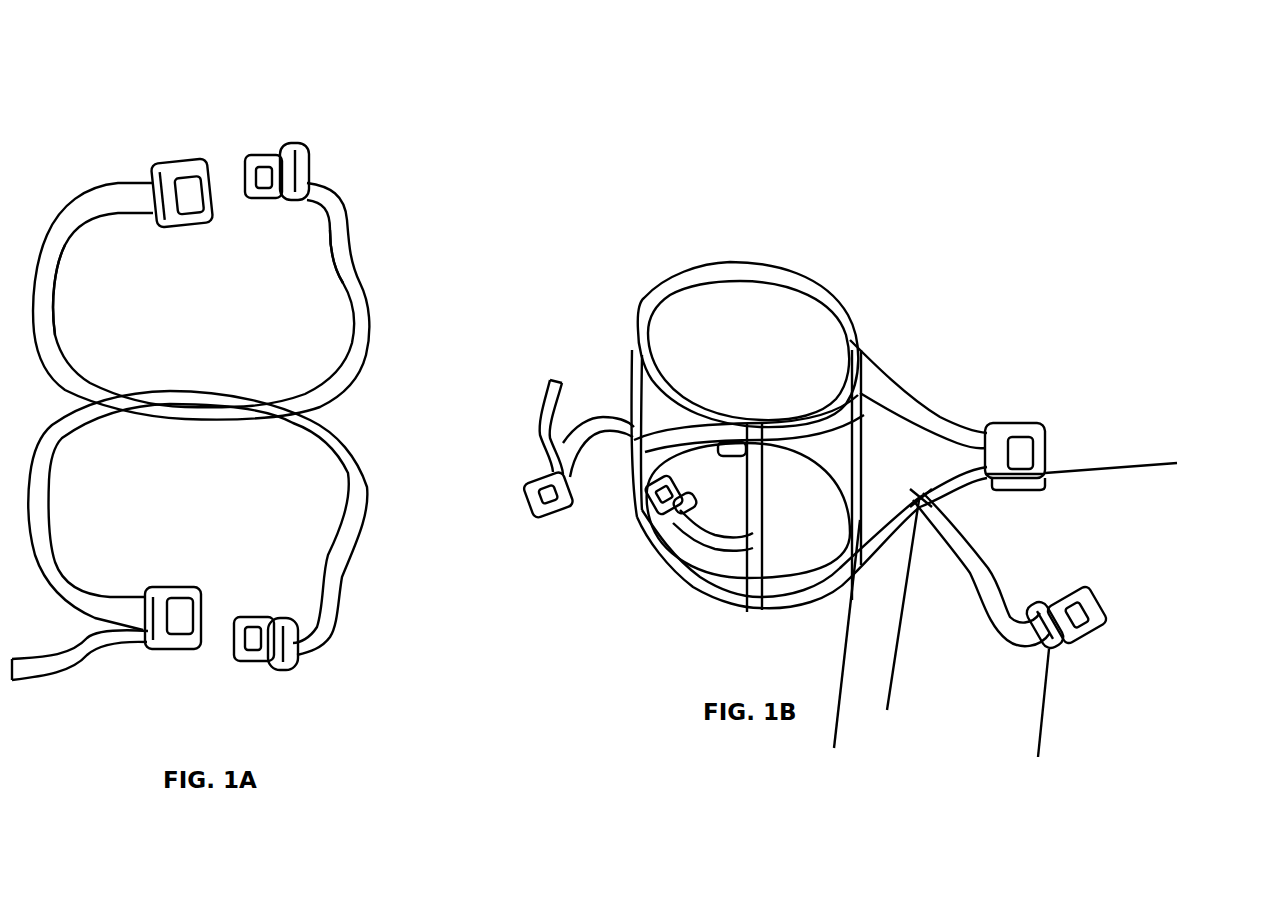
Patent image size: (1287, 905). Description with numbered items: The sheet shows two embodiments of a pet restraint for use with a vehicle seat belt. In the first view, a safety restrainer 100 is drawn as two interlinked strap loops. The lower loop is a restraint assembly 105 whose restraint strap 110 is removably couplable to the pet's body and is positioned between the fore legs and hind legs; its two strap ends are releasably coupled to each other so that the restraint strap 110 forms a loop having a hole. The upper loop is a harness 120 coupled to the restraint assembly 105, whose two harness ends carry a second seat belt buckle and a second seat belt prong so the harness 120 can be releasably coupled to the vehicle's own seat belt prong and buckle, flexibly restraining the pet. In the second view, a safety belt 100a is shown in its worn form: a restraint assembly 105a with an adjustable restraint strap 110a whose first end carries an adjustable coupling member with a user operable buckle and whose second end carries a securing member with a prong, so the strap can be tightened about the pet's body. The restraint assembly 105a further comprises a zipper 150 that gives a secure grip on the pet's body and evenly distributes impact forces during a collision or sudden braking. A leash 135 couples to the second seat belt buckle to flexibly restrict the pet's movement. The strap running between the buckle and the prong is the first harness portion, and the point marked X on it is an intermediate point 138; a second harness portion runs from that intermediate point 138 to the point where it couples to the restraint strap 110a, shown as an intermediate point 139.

In FIG. 1A, the safety restrainer 100 is at (254, 407).
In FIG. 1A, the restraint assembly 105 is at (218, 535).
In FIG. 1A, the restraint strap 110 is at (194, 523).
In FIG. 1A, the harness 120 is at (233, 301).
In FIG. 1B, the safety belt 100a is at (838, 517).
In FIG. 1B, the restraint assembly 105a is at (809, 428).
In FIG. 1B, the restraint strap 110a is at (748, 330).
In FIG. 1B, the leash 135 is at (990, 569).
In FIG. 1B, the intermediate point 138 is at (889, 626).
In FIG. 1B, the intermediate point 139 is at (828, 647).
In FIG. 1B, the zipper 150 is at (788, 539).